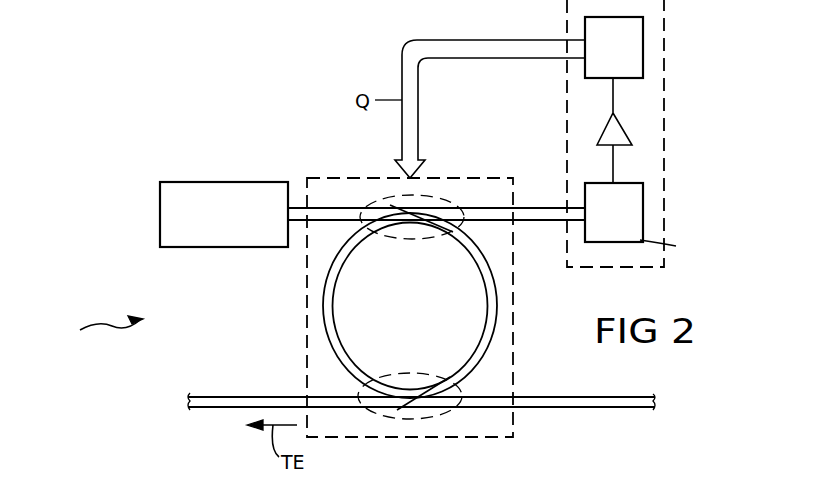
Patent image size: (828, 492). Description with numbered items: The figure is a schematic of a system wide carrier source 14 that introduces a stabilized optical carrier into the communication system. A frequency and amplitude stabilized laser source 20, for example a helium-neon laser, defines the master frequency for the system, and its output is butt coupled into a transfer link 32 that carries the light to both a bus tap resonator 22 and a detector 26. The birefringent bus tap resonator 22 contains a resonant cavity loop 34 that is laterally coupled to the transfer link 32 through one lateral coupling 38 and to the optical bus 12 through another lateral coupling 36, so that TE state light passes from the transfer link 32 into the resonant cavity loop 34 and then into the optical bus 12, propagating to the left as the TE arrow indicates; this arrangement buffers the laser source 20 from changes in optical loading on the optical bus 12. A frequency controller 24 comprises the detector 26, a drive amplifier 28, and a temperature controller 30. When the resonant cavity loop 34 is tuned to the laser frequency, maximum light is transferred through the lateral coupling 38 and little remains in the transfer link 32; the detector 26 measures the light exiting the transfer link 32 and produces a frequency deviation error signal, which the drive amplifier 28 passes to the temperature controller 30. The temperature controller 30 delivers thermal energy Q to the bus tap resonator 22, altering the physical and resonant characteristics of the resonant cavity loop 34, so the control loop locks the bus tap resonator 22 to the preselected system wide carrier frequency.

The optical bus 12 is at (578, 406).
The system wide carrier source 14 is at (96, 351).
The laser source 20 is at (197, 182).
The bus tap resonator 22 is at (307, 319).
The frequency controller 24 is at (664, 198).
The detector 26 is at (677, 220).
The drive amplifier 28 is at (611, 120).
The temperature controller 30 is at (614, 47).
The transfer link 32 is at (552, 210).
The resonant cavity loop 34 is at (488, 316).
The lateral coupling 36 is at (432, 372).
The lateral coupling 38 is at (415, 243).